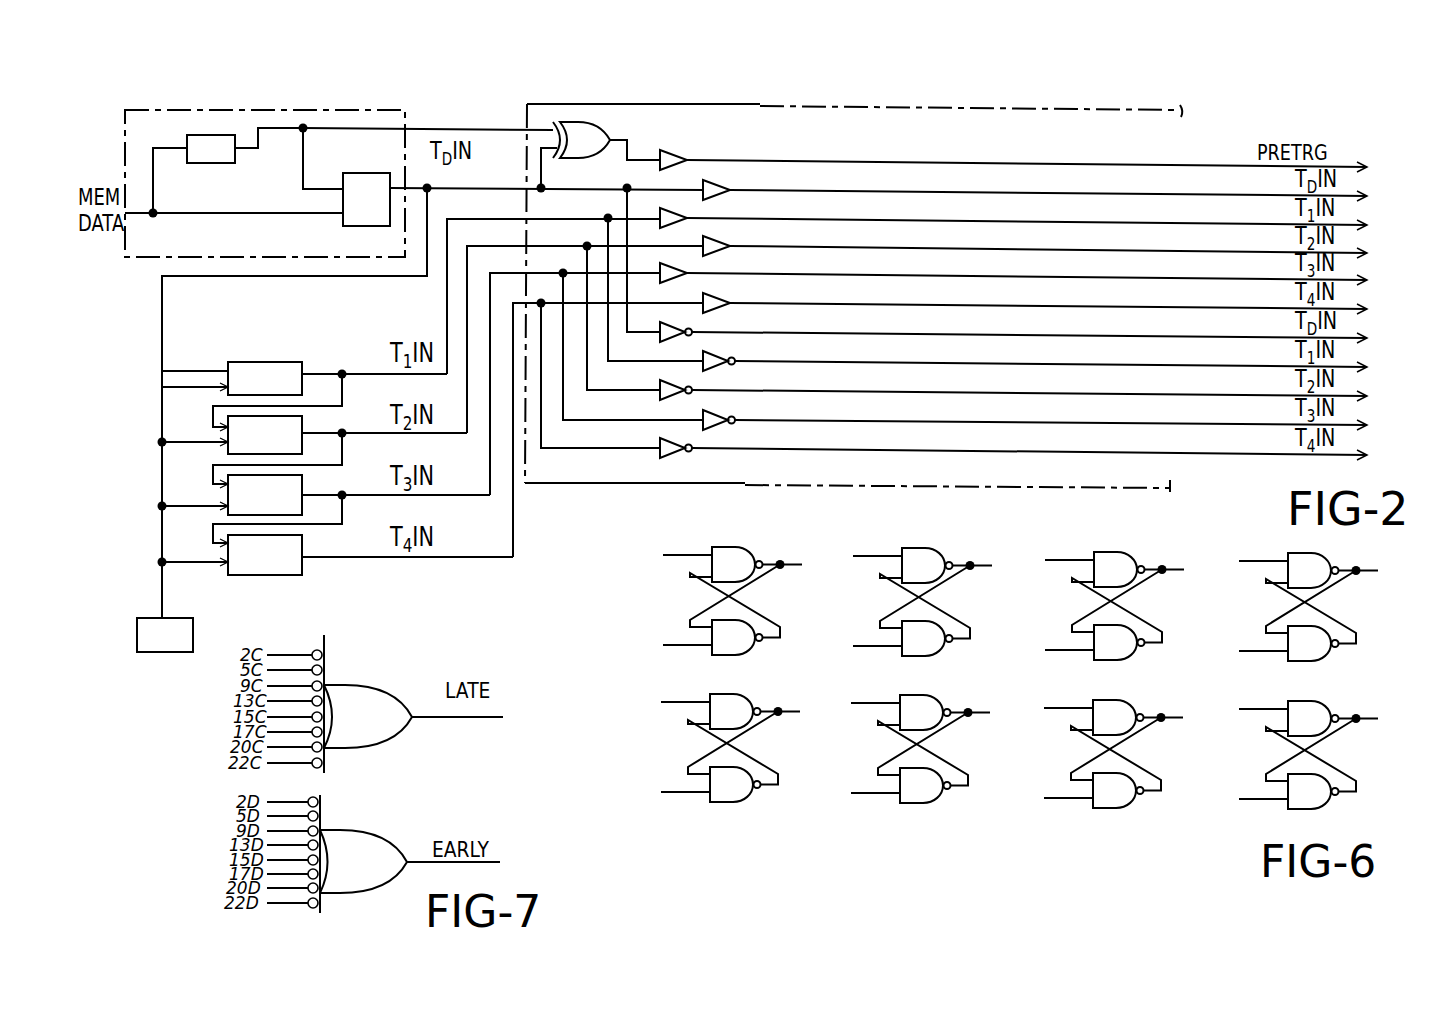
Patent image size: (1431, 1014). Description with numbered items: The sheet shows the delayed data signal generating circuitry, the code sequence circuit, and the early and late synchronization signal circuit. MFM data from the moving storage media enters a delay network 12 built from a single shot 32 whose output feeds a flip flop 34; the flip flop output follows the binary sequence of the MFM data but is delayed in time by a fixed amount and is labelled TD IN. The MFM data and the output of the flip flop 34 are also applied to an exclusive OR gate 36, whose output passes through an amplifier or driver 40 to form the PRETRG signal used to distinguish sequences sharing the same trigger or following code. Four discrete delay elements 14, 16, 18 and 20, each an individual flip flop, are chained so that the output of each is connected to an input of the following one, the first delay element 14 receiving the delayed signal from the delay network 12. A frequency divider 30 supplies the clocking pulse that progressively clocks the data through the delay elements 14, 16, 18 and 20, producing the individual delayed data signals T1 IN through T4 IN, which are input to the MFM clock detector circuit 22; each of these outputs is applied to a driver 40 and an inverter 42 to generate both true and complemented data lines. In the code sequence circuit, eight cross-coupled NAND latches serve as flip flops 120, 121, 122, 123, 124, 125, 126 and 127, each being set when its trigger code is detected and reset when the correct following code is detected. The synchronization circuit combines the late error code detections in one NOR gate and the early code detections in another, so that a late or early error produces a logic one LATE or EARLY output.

In FIG. 2, the delay network 12 is at (132, 132).
In FIG. 2, the delay element 14 is at (299, 363).
In FIG. 2, the delay element 16 is at (298, 422).
In FIG. 2, the delay element 18 is at (299, 477).
In FIG. 2, the delay element 20 is at (307, 548).
In FIG. 2, the MFM clock detector circuit 22 is at (1117, 485).
In FIG. 2, the frequency divider 30 is at (193, 621).
In FIG. 2, the single shot 32 is at (213, 163).
In FIG. 2, the flip flop 34 is at (372, 157).
In FIG. 2, the exclusive OR gate 36 is at (587, 124).
In FIG. 2, the driver 40 is at (672, 158).
In FIG. 2, the inverter 42 is at (717, 417).
In FIG. 6, the flip flop 120 is at (728, 600).
In FIG. 6, the flip flop 121 is at (925, 601).
In FIG. 6, the flip flop 122 is at (1120, 605).
In FIG. 6, the flip flop 123 is at (1314, 606).
In FIG. 6, the flip flop 124 is at (731, 747).
In FIG. 6, the flip flop 125 is at (920, 745).
In FIG. 6, the flip flop 126 is at (1117, 751).
In FIG. 6, the flip flop 127 is at (1311, 751).